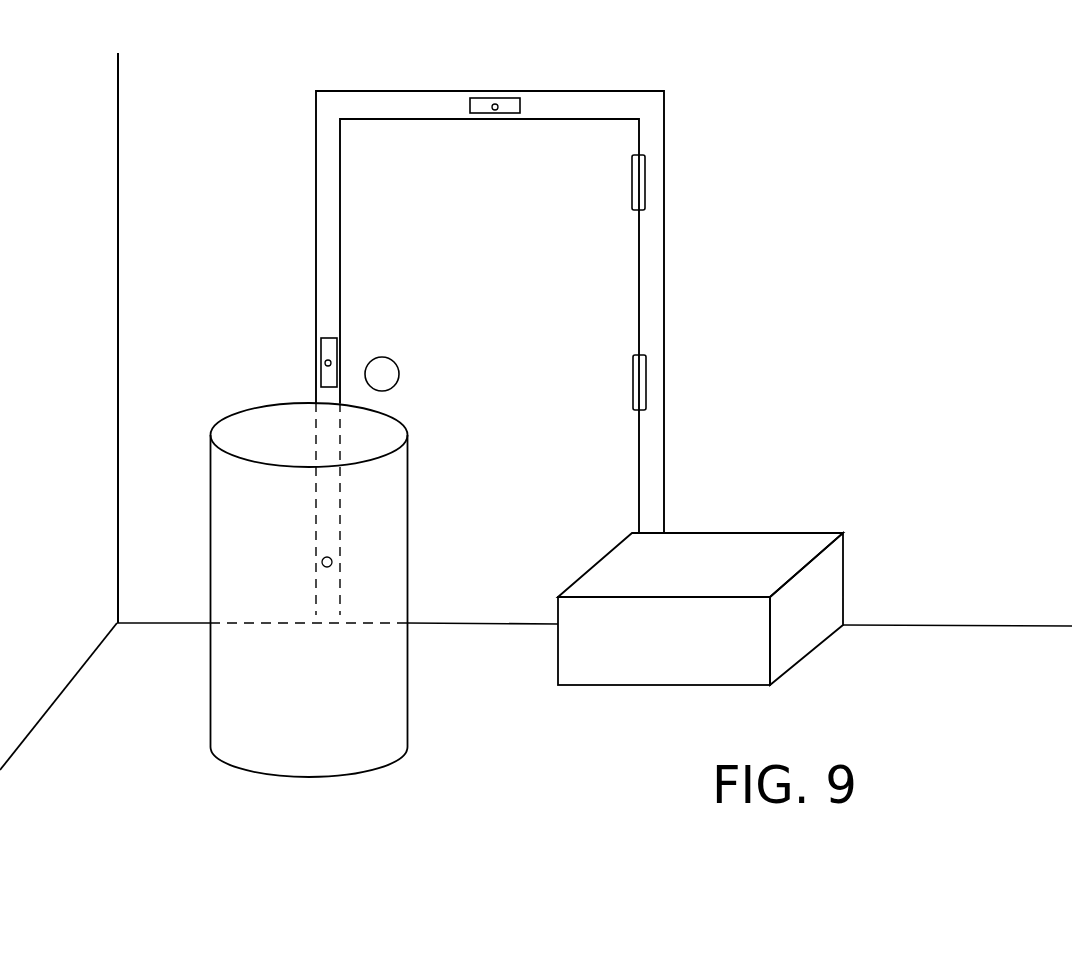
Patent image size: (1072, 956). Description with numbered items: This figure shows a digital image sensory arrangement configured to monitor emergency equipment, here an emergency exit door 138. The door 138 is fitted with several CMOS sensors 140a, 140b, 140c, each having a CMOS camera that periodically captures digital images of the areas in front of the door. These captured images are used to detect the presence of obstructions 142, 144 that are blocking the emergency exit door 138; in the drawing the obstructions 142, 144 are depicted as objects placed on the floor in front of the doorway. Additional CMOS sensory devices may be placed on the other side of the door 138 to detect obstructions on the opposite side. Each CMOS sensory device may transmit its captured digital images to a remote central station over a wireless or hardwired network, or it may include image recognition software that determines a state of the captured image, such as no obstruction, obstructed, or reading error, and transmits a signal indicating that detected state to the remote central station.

The door 138 is at (626, 308).
The CMOS sensor 140a is at (494, 103).
The CMOS sensor 140b is at (323, 363).
The CMOS sensor 140c is at (321, 562).
The obstruction 142 is at (227, 653).
The obstruction 144 is at (684, 670).